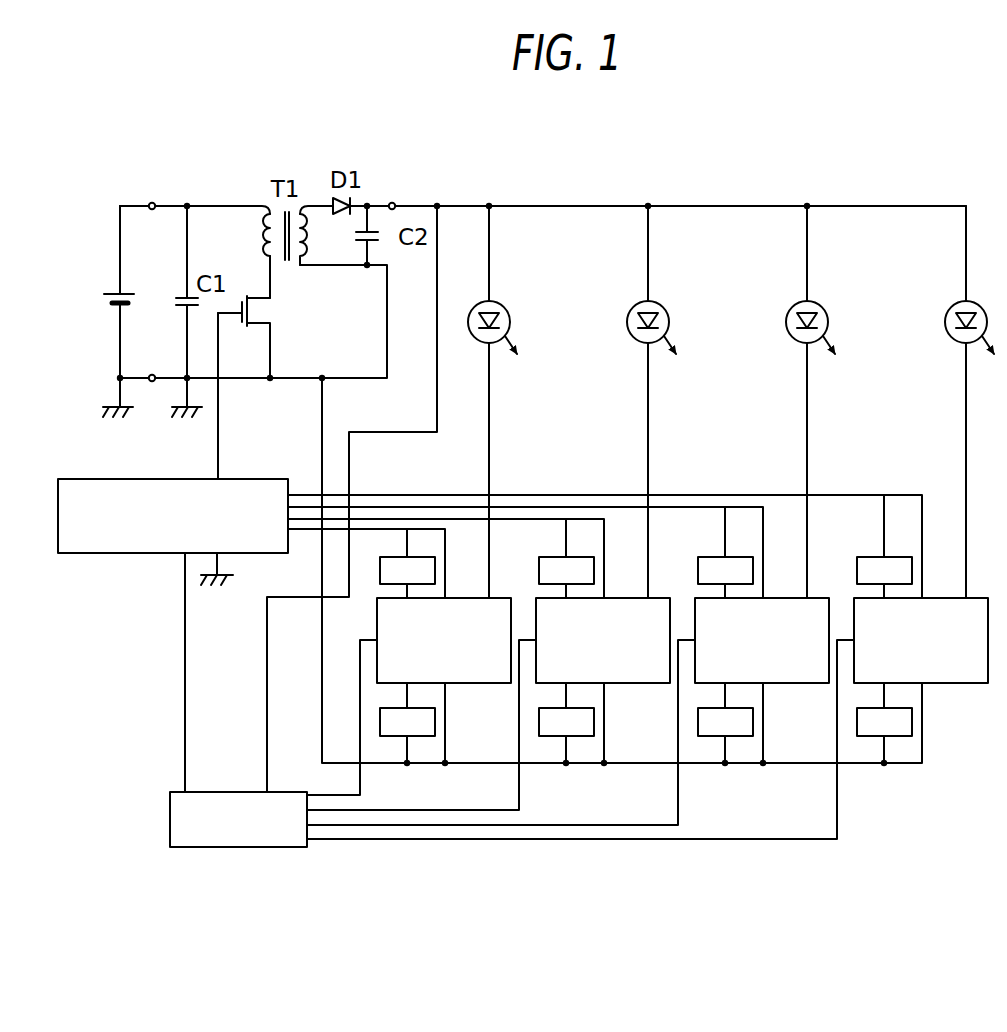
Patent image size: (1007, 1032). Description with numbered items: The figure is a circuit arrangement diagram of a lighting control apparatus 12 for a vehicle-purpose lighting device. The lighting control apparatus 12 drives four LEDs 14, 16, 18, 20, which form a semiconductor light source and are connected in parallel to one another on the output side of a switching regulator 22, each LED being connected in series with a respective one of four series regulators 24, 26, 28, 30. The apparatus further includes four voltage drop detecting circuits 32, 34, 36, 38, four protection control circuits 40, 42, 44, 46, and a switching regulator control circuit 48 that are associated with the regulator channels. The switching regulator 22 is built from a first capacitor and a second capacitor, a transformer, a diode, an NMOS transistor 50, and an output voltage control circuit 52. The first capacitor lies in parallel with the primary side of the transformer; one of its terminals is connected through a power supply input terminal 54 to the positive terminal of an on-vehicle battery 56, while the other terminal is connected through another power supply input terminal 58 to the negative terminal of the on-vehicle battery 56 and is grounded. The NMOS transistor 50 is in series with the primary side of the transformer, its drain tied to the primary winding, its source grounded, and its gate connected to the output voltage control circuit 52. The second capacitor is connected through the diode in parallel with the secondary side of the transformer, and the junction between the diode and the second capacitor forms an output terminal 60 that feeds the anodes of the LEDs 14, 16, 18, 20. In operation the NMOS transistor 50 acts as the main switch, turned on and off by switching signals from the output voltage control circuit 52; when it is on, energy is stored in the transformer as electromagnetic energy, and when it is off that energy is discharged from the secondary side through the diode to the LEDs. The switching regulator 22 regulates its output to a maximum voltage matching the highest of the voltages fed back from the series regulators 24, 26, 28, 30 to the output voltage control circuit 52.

The lighting control apparatus 12 is at (797, 160).
The LED 14 is at (503, 305).
The LED 16 is at (662, 305).
The LED 18 is at (821, 305).
The LED 20 is at (952, 306).
The switching regulator 22 is at (222, 182).
The series regulator 24 is at (475, 683).
The series regulator 26 is at (633, 683).
The series regulator 28 is at (792, 683).
The series regulator 30 is at (945, 683).
The voltage drop detecting circuit 32 is at (407, 557).
The voltage drop detecting circuit 34 is at (566, 557).
The voltage drop detecting circuit 36 is at (725, 557).
The voltage drop detecting circuit 38 is at (884, 557).
The protection control circuit 40 is at (425, 736).
The protection control circuit 42 is at (584, 736).
The protection control circuit 44 is at (743, 736).
The protection control circuit 46 is at (902, 736).
The switching regulator control circuit 48 is at (300, 847).
The NMOS transistor 50 is at (243, 327).
The output voltage control circuit 52 is at (265, 479).
The power supply input terminal 54 is at (152, 203).
The on-vehicle battery 56 is at (131, 297).
The power supply input terminal 58 is at (152, 381).
The output terminal 60 is at (392, 203).